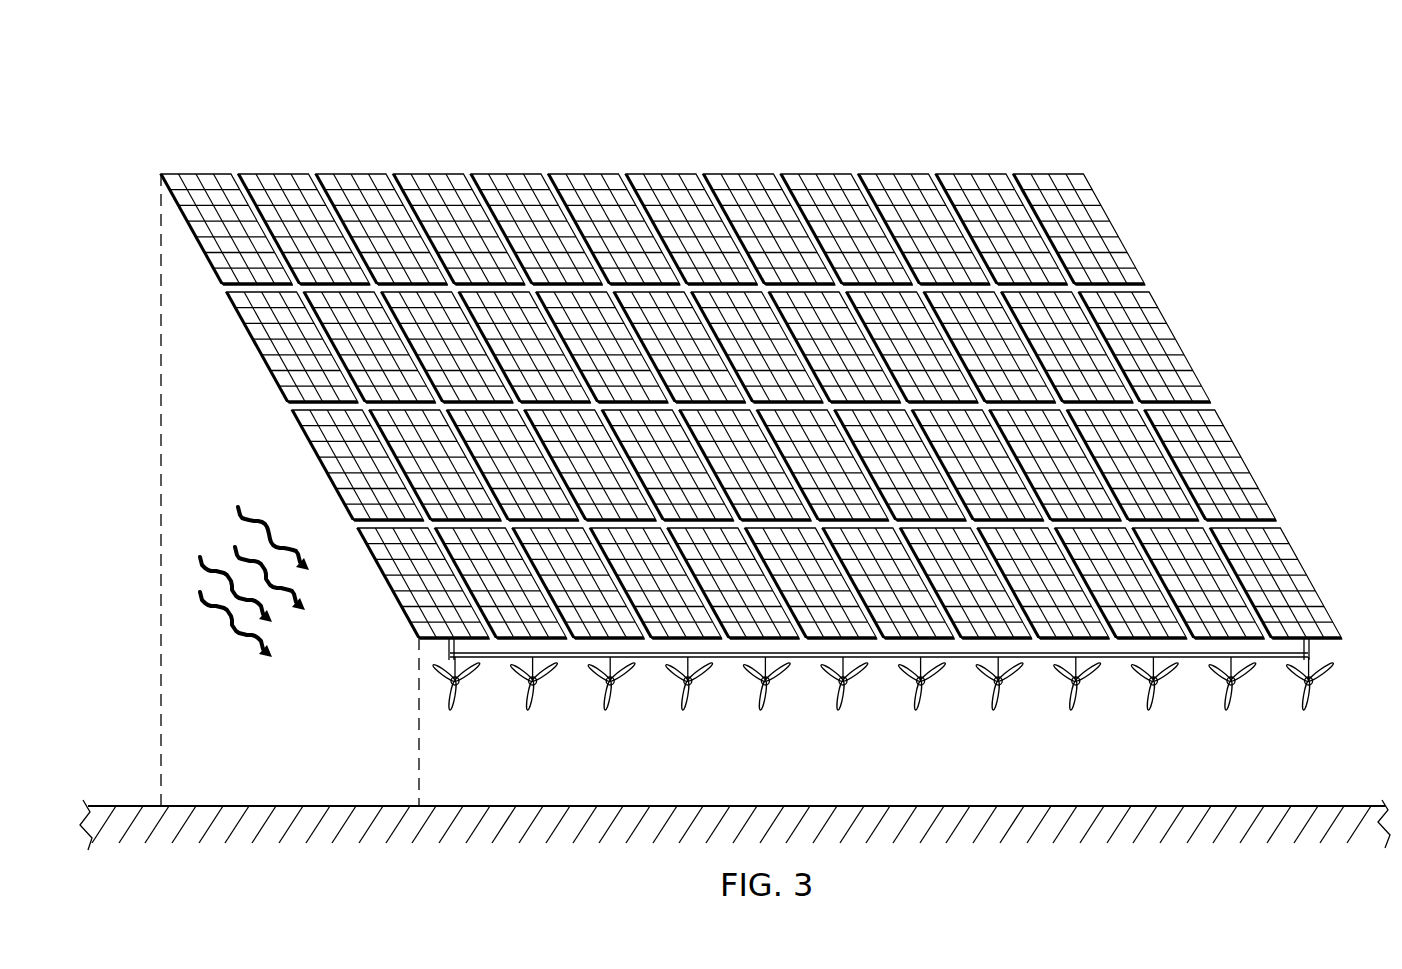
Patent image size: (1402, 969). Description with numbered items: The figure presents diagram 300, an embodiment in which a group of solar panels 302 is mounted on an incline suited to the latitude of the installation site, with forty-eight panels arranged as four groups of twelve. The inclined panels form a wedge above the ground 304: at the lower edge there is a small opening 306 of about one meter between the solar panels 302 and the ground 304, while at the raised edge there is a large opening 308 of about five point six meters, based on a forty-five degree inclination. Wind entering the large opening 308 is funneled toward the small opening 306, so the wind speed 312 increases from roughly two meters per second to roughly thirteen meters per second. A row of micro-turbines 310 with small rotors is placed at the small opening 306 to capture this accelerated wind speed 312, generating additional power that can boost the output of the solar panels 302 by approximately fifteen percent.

The diagram 300 is at (1166, 57).
The solar panels 302 is at (1105, 190).
The ground 304 is at (1297, 806).
The small opening 306 is at (419, 741).
The large opening 308 is at (161, 400).
The micro-turbines 310 is at (1318, 718).
The wind speed 312 is at (236, 628).